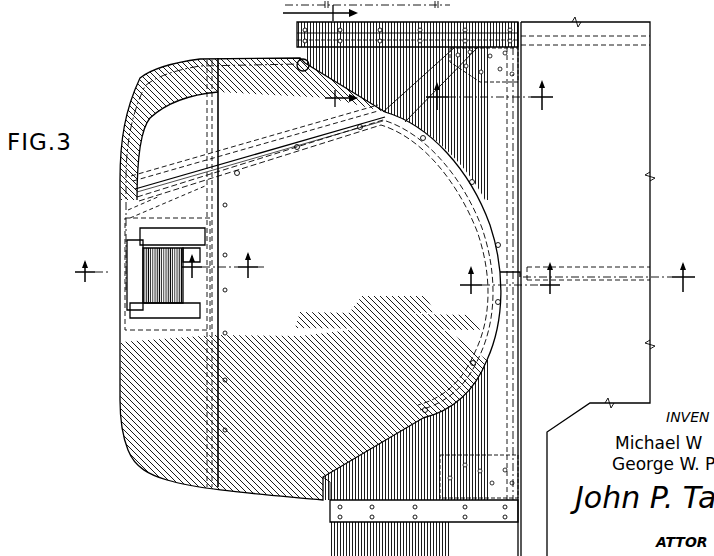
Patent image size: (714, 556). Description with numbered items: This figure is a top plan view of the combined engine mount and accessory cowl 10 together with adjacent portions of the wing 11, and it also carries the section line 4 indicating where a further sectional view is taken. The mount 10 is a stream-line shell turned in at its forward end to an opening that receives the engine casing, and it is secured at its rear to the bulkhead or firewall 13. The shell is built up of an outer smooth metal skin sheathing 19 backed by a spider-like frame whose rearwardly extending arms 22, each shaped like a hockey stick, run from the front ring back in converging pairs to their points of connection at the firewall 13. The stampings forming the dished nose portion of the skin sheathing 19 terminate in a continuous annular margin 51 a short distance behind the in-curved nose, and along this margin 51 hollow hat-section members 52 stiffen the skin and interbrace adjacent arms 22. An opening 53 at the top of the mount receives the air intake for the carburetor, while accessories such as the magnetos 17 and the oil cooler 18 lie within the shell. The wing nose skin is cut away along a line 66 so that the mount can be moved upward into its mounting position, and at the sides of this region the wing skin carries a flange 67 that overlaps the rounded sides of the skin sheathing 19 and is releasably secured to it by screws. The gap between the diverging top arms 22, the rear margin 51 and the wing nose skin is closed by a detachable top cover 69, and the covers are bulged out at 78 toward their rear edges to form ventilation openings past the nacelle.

The section line 4- 4 is at (381, 287).
The combined engine mount and accessory cowl 10 is at (163, 64).
The wing 11 is at (611, 23).
The bulkhead or firewall 13 is at (489, 106).
The magnetos 17 is at (223, 276).
The oil cooler 18 is at (356, 56).
The outer smooth metal skin sheathing 19 is at (125, 468).
The rearwardly extending arms 22 is at (198, 72).
The annular margin 51 is at (221, 115).
The hat-section members 52 is at (212, 131).
The opening 53 is at (170, 228).
The cut away line 66 is at (470, 177).
The flange 67 is at (302, 58).
The top cover 69 is at (467, 212).
The bulged portion 78 is at (409, 279).